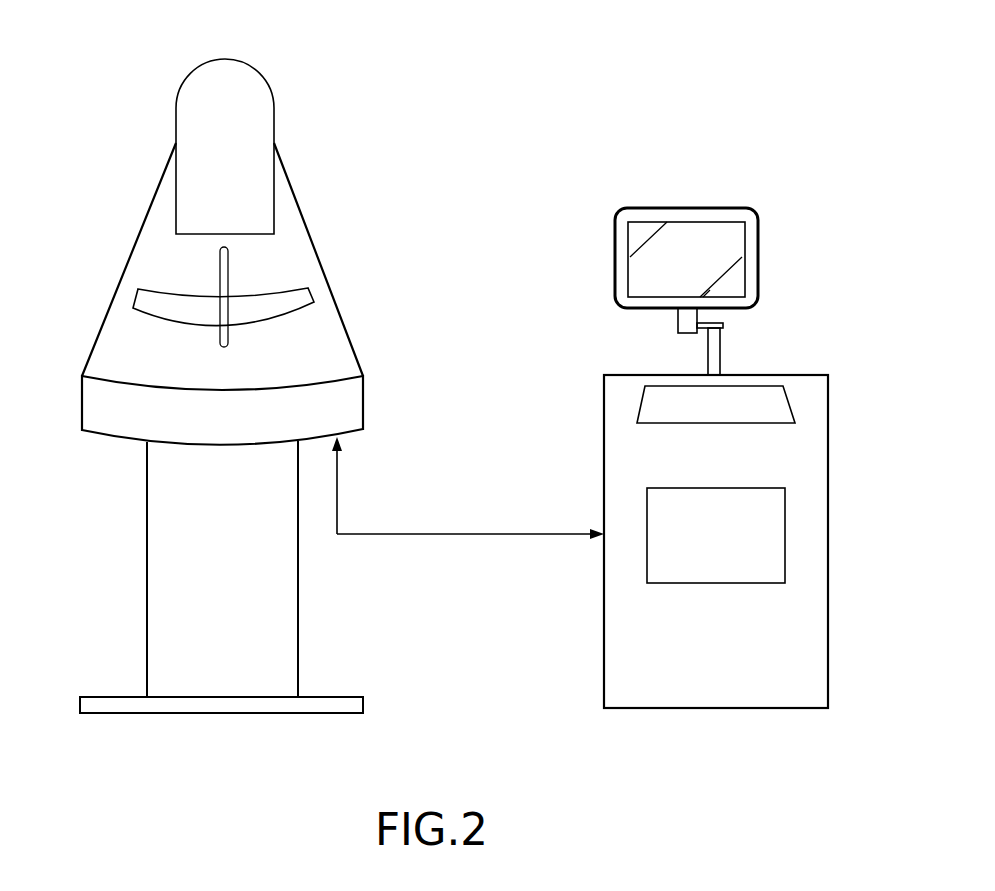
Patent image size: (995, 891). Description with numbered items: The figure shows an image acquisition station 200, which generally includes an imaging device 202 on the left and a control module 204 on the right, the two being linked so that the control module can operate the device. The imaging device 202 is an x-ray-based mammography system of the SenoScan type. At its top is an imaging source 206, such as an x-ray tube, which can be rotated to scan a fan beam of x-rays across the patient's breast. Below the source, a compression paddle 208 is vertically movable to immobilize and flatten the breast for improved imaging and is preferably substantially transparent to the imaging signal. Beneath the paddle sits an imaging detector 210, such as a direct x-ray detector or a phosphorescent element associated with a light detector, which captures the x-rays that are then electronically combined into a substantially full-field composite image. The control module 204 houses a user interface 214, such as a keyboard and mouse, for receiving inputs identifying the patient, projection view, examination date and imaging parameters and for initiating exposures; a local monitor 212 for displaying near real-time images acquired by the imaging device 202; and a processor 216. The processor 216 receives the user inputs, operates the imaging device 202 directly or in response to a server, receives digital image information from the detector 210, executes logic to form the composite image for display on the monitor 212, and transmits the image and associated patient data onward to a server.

The acquisition station 200 is at (535, 126).
The imaging device 202 is at (93, 481).
The control module 204 is at (846, 381).
The imaging source 206 is at (260, 100).
The compression paddle 208 is at (275, 315).
The imaging detector 210 is at (353, 402).
The local monitor 212 is at (757, 212).
The user interface 214 is at (770, 393).
The processor 216 is at (750, 583).